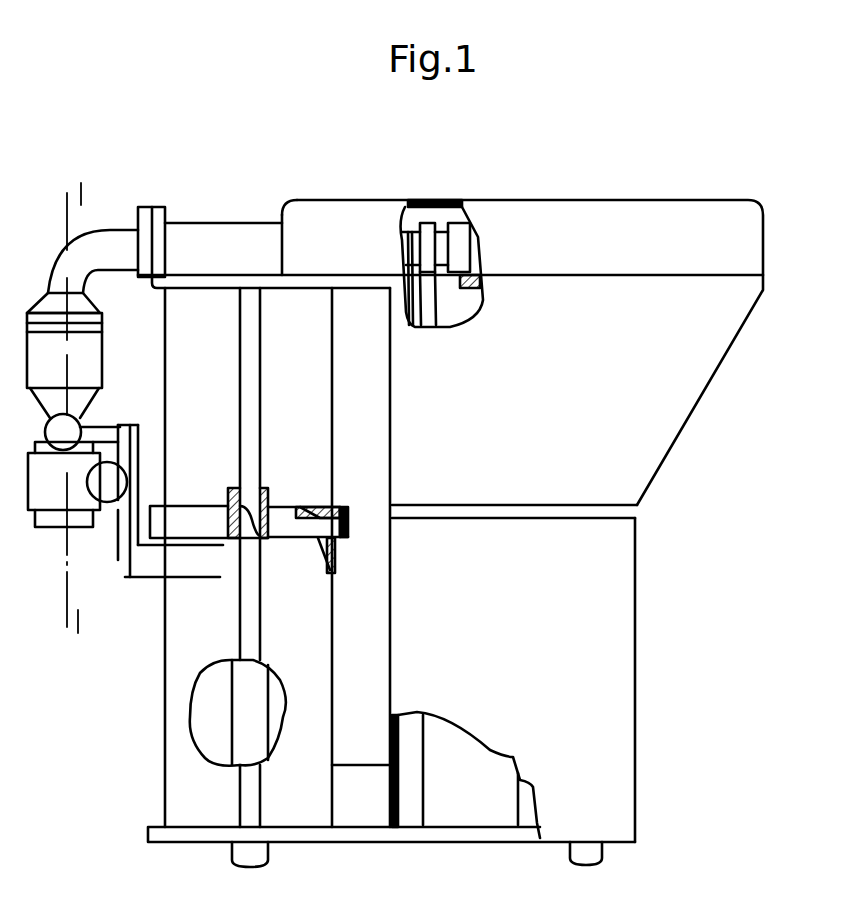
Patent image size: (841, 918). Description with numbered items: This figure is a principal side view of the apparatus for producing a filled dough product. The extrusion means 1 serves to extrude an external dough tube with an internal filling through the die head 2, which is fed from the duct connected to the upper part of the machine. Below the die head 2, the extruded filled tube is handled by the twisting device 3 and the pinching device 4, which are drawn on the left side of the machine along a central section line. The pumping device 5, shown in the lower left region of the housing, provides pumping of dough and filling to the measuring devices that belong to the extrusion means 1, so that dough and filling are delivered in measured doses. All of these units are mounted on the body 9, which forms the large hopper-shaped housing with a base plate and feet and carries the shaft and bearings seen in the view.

The extrusion means 1 is at (182, 232).
The die head 2 is at (92, 346).
The twisting device 3 is at (73, 500).
The pinching device 4 is at (78, 430).
The pumping device 5 is at (202, 715).
The body 9 is at (617, 703).